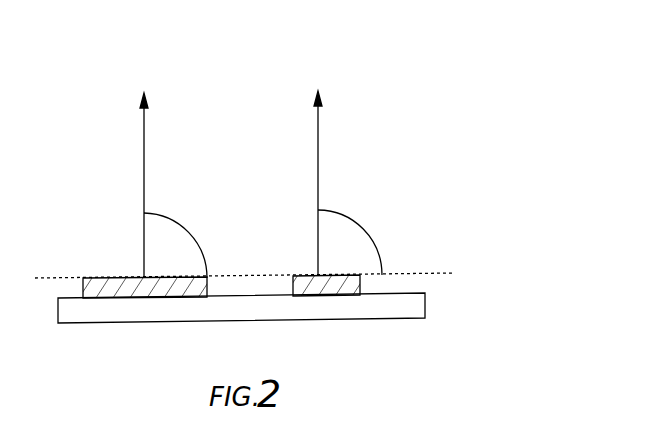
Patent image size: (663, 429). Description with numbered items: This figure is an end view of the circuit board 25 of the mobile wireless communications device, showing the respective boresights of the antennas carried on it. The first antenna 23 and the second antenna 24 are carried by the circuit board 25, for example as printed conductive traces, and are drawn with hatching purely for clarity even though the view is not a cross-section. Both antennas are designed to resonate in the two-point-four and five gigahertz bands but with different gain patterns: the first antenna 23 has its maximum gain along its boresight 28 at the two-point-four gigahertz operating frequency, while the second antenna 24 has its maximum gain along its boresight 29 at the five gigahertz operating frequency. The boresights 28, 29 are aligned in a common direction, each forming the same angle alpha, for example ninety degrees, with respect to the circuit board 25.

The first antenna 23 is at (282, 275).
The second antenna 24 is at (108, 278).
The circuit board 25 is at (425, 305).
The boresight of the first antenna 28 is at (318, 143).
The boresight of the second antenna 29 is at (144, 143).